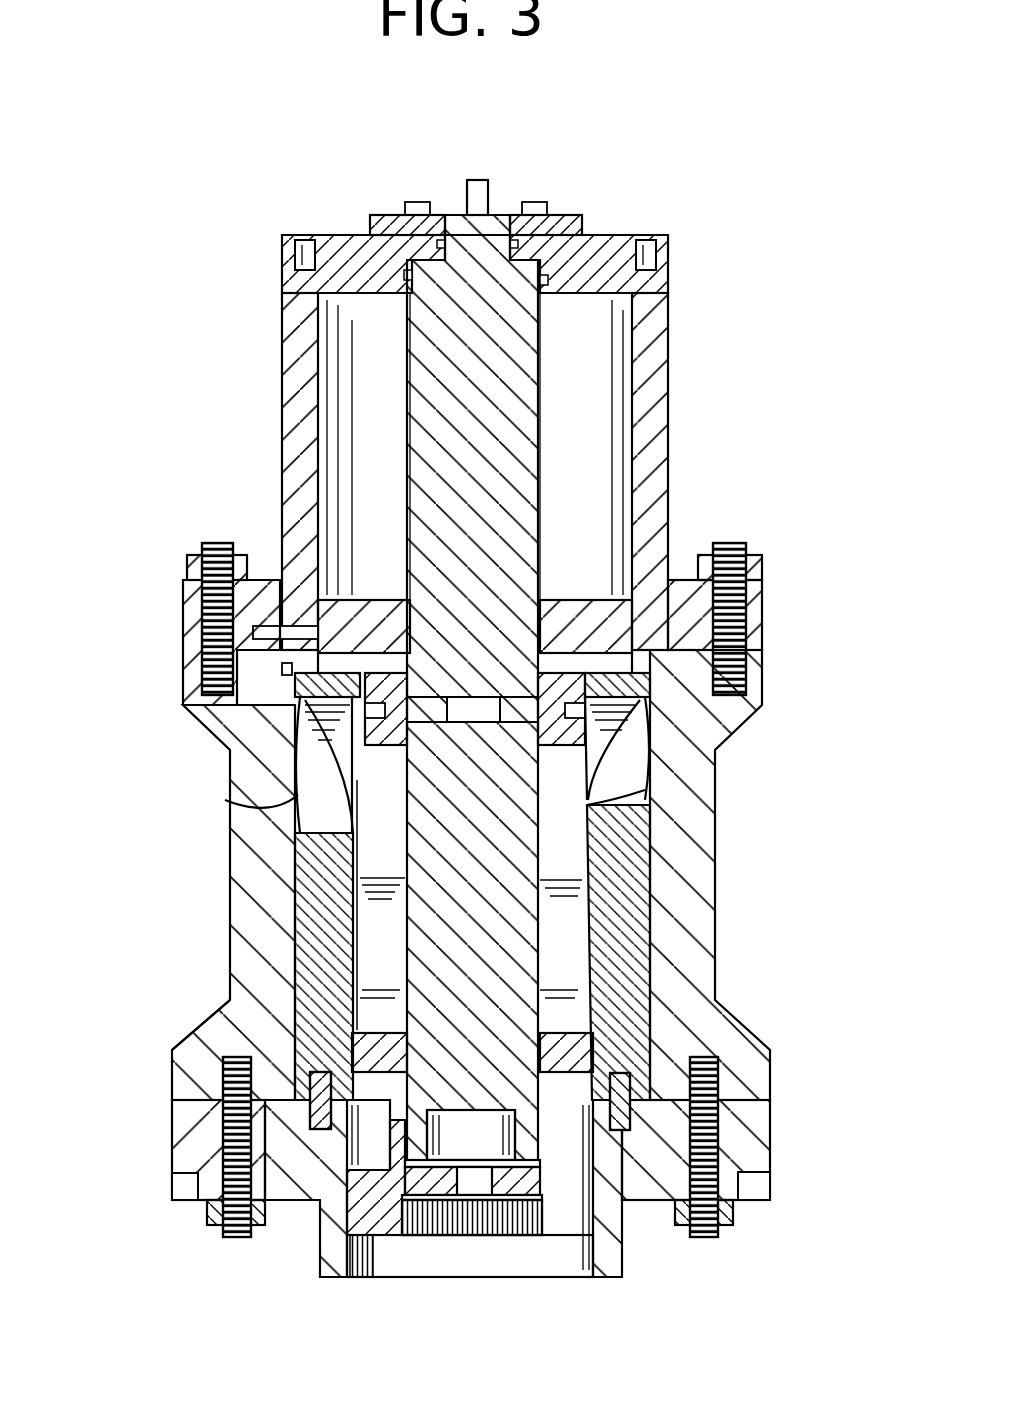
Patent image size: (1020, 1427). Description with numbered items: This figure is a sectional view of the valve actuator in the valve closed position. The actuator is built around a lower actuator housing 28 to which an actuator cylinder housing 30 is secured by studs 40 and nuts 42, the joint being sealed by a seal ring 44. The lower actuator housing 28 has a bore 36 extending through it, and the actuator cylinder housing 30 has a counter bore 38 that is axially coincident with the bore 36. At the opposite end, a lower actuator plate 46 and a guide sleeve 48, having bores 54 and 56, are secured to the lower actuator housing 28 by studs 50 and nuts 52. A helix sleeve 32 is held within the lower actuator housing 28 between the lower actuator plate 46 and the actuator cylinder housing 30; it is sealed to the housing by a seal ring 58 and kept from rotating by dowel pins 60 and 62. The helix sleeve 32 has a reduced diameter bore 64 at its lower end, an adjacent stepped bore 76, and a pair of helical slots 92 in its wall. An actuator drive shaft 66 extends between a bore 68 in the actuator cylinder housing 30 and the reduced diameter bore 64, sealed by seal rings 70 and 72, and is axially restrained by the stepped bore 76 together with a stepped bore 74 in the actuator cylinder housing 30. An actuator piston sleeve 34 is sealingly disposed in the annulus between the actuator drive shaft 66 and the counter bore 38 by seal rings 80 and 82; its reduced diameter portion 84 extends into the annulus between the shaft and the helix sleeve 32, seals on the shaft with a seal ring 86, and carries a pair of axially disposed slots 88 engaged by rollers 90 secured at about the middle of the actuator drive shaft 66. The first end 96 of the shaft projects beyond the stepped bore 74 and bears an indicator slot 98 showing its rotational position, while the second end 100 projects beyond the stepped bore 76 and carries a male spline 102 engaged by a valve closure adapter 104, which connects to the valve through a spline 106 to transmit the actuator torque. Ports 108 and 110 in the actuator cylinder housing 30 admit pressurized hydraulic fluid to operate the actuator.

The lower actuator housing 28 is at (717, 880).
The actuator cylinder housing 30 is at (668, 402).
The helix sleeve 32 is at (645, 786).
The actuator piston sleeve 34 is at (603, 597).
The bore 36 is at (300, 800).
The counter bore 38 is at (330, 418).
The studs 40 is at (215, 545).
The nuts 42 is at (190, 572).
The seal ring 44 is at (270, 722).
The lower actuator plate 46 is at (175, 1110).
The guide sleeve 48 is at (175, 1186).
The studs 50 is at (705, 1240).
The nuts 52 is at (740, 1212).
The bore 54 is at (630, 1247).
The bore 56 is at (590, 1267).
The seal ring 58 is at (300, 1085).
The dowel pin 60 is at (650, 1072).
The dowel pin 62 is at (650, 690).
The reduced diameter bore 64 is at (410, 992).
The actuator drive shaft 66 is at (545, 338).
The bore 68 is at (443, 248).
The seal ring 70 is at (540, 1082).
The seal ring 72 is at (408, 278).
The stepped bore 74 is at (443, 243).
The stepped bore 76 is at (320, 1132).
The seal ring 80 is at (345, 622).
The seal ring 82 is at (505, 606).
The reduced diameter portion 84 is at (610, 1015).
The seal ring 86 is at (270, 1012).
The axially disposed slots 88 is at (380, 838).
The rollers 90 is at (665, 582).
The helical slots 92 is at (620, 720).
The first end 96 is at (488, 207).
The indicator slot 98 is at (473, 178).
The second end 100 is at (585, 1135).
The male spline 102 is at (345, 1143).
The valve closure adapter 104 is at (563, 1217).
The spline 106 is at (413, 1236).
The port 108 is at (240, 692).
The port 110 is at (320, 302).